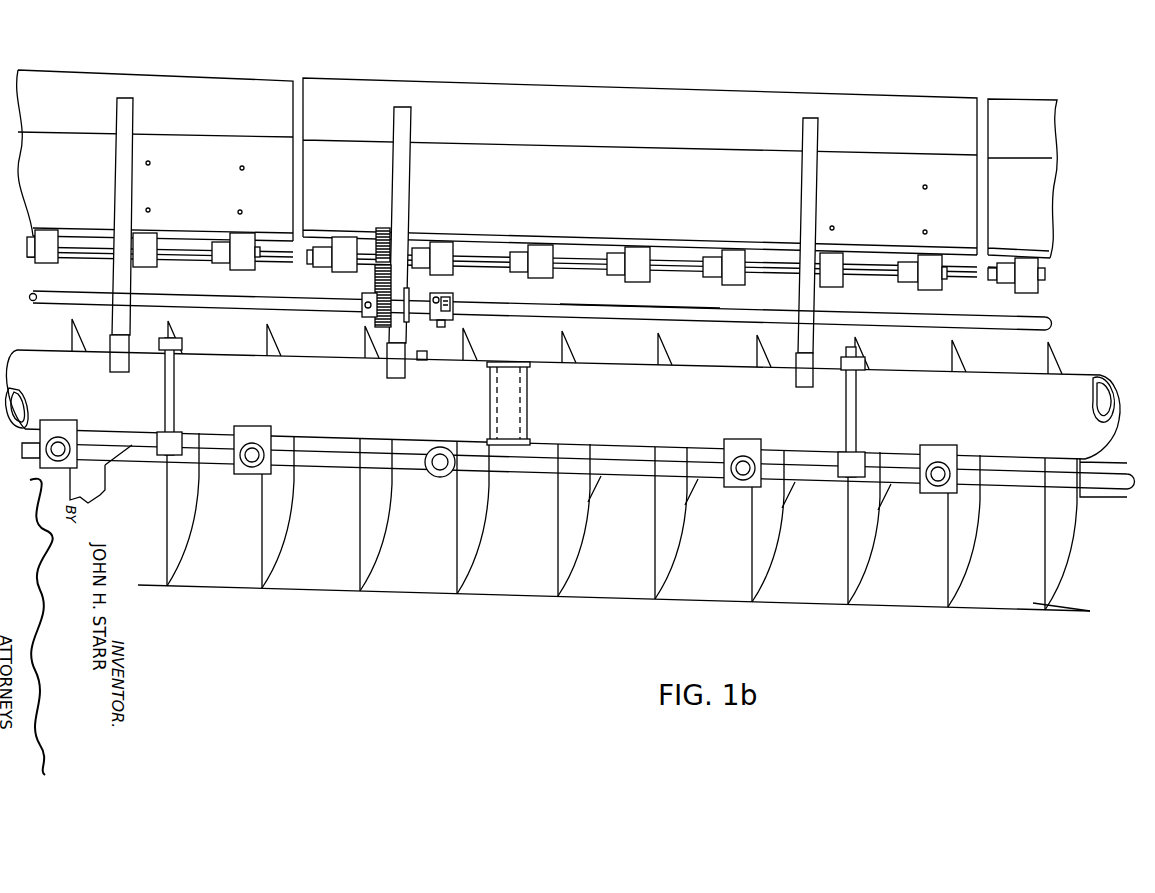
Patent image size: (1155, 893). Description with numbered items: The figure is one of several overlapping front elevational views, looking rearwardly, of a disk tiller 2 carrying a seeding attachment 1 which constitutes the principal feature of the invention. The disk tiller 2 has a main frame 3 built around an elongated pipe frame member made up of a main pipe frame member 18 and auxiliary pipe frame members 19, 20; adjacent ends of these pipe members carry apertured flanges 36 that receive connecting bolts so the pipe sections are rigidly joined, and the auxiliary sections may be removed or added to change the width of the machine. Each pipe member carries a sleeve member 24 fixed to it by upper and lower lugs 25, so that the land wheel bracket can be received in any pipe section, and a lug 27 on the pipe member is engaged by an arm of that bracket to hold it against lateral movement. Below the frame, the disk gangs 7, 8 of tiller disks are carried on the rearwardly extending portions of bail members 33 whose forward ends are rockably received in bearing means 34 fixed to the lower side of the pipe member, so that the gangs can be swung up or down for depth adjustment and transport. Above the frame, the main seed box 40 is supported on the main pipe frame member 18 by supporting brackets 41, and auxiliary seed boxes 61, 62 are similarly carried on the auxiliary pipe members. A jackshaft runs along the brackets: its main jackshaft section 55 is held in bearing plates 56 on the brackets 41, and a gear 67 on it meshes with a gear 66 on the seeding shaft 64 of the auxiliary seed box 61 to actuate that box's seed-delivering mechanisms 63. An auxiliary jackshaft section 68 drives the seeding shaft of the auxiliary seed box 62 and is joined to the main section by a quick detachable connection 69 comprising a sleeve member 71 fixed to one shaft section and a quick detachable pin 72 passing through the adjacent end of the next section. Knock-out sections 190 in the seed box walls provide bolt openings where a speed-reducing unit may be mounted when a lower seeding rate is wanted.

The seeding attachment 1 is at (229, 52).
The disk tiller 2 is at (407, 657).
The main frame 3 is at (713, 363).
The disk gang 7 is at (571, 595).
The disk gang 8 is at (1032, 605).
The main pipe frame member 18 is at (53, 350).
The auxiliary pipe frame member 19 is at (614, 370).
The auxiliary pipe frame member 20 is at (1000, 380).
The sleeve member 24 is at (516, 412).
The lugs 25 is at (517, 362).
The lug 27 is at (423, 361).
The bail members 33 is at (143, 456).
The bearing means 34 is at (68, 427).
The flanges 36 is at (170, 418).
The main seed box 40 is at (43, 67).
The supporting brackets 41 is at (136, 162).
The main jackshaft section 55 is at (95, 290).
The bearing plates 56 is at (410, 298).
The auxiliary seed box 61 is at (562, 78).
The auxiliary seed box 62 is at (1019, 97).
The seed-delivering mechanisms 63 is at (240, 265).
The seeding shaft 64 is at (190, 250).
The gear 66 is at (379, 243).
The gear 67 is at (370, 292).
The auxiliary jackshaft section 68 is at (603, 305).
The quick detachable connection 69 is at (462, 282).
The sleeve member 71 is at (437, 316).
The quick detachable pin 72 is at (456, 305).
The knock-out sections 190 is at (238, 211).